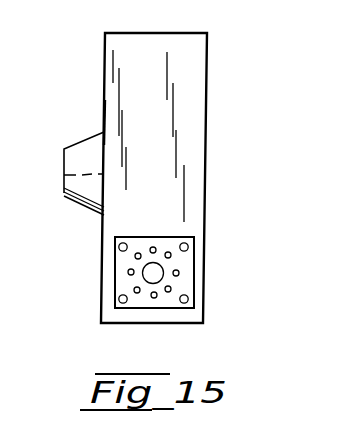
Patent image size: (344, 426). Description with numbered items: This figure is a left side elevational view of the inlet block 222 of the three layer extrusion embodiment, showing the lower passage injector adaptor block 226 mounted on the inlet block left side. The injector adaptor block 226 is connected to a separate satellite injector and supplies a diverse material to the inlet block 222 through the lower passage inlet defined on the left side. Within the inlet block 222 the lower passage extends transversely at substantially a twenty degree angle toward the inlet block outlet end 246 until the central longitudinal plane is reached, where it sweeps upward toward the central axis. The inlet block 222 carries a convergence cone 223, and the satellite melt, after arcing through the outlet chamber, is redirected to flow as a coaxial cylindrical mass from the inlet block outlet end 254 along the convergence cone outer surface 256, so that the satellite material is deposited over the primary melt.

The inlet block 222 is at (131, 28).
The inlet block outlet end 246 is at (105, 68).
The inlet block outlet end 254 is at (105, 121).
The convergence cone outer surface 256 is at (66, 147).
The convergence cone 223 is at (81, 203).
The injector adaptor block 226 is at (108, 263).